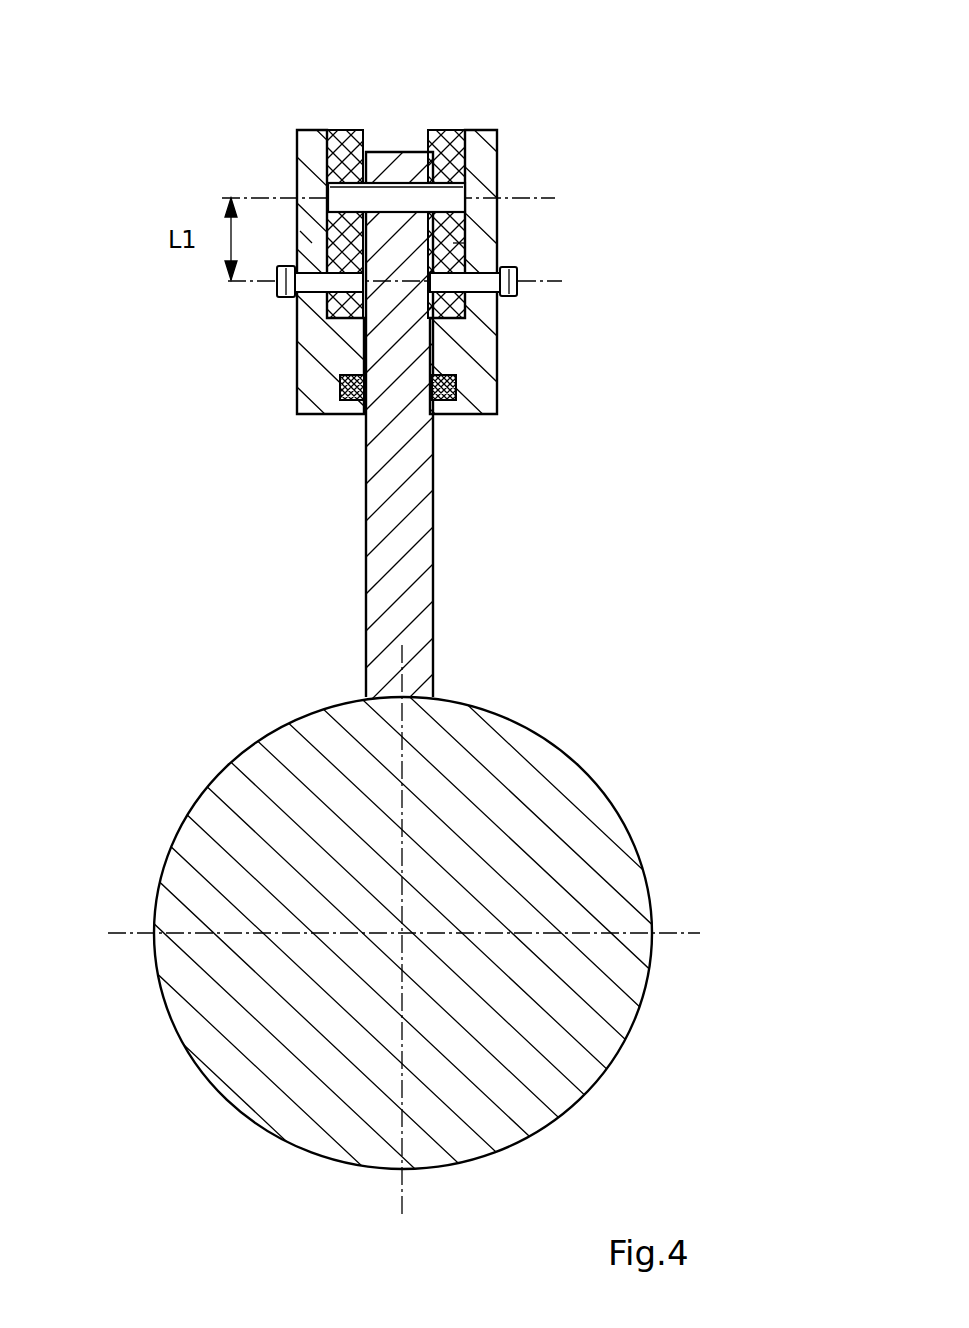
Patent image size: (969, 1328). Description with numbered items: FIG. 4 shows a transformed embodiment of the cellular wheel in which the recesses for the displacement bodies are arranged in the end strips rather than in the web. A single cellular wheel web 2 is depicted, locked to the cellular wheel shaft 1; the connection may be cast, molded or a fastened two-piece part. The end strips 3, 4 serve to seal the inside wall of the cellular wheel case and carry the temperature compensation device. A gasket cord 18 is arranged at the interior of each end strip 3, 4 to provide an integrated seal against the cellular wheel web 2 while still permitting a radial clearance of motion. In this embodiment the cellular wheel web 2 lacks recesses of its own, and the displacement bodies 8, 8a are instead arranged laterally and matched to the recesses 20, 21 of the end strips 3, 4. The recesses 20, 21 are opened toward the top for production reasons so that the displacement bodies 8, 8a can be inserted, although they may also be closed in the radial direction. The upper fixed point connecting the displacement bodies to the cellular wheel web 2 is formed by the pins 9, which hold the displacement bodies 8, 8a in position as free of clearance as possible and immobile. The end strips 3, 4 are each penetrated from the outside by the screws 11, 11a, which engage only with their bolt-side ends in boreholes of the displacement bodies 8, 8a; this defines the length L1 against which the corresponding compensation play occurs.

The cellular wheel shaft 1 is at (510, 813).
The cellular wheel web 2 is at (413, 563).
The end strip 3 is at (500, 352).
The end strip 4 is at (313, 353).
The displacement body 8 is at (451, 148).
The displacement body 8a is at (343, 150).
The pin 9 is at (252, 146).
The screw 11 is at (280, 288).
The screw 11a is at (516, 290).
The gasket cord 18 is at (342, 398).
The recess 20 is at (452, 243).
The recess 21 is at (177, 201).